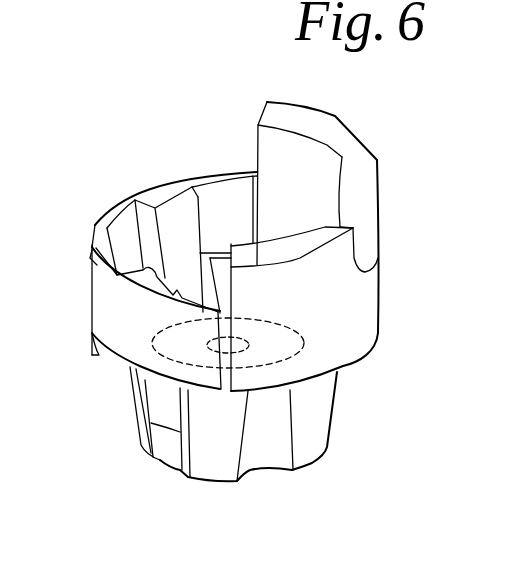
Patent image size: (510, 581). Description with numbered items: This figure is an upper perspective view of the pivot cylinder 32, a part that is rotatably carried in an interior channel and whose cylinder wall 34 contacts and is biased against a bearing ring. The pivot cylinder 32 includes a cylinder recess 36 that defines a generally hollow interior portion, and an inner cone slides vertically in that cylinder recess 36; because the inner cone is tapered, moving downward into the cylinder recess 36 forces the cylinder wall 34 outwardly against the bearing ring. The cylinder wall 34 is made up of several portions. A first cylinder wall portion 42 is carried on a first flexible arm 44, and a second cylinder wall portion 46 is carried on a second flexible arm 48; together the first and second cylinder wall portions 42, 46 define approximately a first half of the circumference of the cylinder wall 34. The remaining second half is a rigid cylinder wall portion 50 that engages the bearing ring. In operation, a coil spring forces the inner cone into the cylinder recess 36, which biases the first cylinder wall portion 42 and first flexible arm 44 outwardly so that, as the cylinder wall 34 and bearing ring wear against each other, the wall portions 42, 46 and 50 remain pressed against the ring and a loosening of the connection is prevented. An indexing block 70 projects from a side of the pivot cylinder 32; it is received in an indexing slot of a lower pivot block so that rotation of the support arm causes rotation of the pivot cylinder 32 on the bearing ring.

The pivot cylinder 32 is at (335, 409).
The cylinder wall 34 is at (332, 347).
The cylinder recess 36 is at (235, 218).
The first cylinder wall portion 42 is at (128, 352).
The first flexible arm 44 is at (172, 450).
The second cylinder wall portion 46 is at (106, 222).
The second flexible arm 48 is at (181, 223).
The rigid cylinder wall portion 50 is at (367, 288).
The indexing block 70 is at (90, 354).